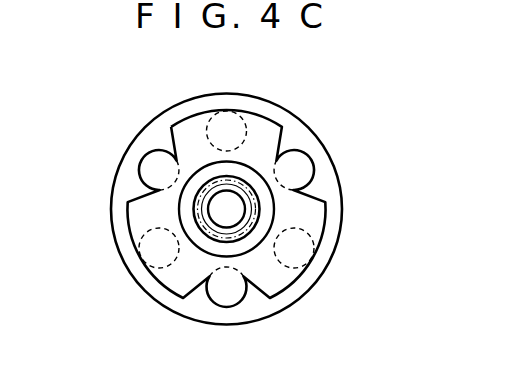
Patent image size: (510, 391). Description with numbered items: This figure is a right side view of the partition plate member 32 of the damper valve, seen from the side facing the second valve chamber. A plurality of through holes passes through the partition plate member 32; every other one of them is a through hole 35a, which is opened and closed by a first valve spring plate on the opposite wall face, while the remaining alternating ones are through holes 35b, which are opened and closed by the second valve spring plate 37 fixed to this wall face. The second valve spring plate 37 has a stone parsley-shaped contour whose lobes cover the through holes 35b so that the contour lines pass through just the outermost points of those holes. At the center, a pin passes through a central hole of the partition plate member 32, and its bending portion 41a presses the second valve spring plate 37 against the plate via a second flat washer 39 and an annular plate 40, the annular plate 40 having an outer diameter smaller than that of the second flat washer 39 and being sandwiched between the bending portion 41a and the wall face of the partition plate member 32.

The partition plate member 32 is at (155, 302).
The second valve spring plate 37 is at (183, 132).
The through hole 35a is at (146, 168).
The through hole 35b is at (228, 114).
The second flat washer 39 is at (246, 178).
The annular plate 40 is at (259, 211).
The bending portion 41a is at (194, 209).